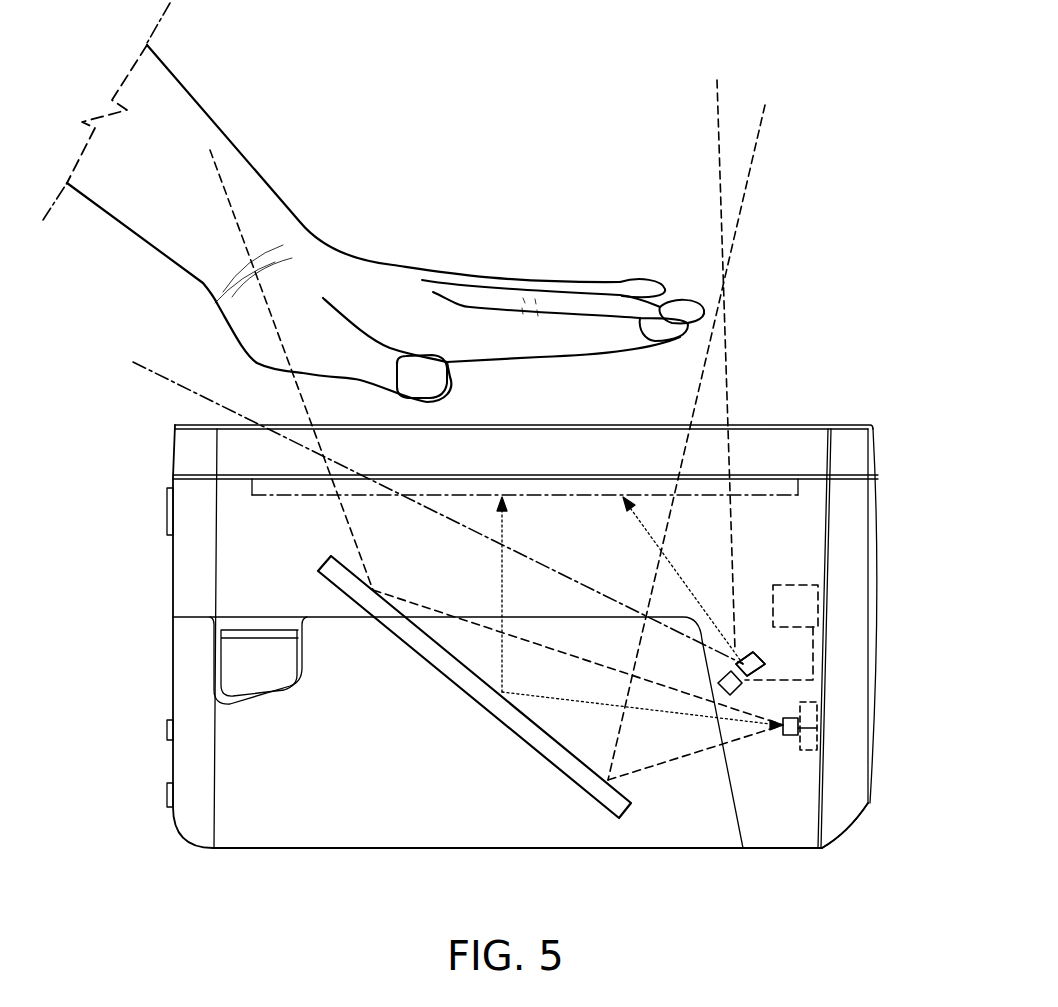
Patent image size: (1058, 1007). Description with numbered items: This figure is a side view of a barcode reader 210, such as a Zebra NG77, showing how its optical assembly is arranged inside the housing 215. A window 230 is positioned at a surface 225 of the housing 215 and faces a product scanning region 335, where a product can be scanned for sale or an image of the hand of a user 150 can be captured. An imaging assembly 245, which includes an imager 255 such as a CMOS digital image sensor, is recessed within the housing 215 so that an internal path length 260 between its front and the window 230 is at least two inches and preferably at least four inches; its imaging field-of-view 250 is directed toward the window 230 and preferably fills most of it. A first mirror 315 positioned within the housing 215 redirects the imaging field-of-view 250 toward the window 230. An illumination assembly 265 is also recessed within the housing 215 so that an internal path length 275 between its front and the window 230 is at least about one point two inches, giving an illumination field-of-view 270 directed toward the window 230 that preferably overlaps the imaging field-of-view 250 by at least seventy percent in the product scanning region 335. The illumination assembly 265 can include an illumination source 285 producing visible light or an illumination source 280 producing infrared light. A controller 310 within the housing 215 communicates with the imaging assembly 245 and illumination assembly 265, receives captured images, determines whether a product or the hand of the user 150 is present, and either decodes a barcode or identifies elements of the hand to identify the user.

The hand of a user 150 is at (392, 254).
The product scanning region 335 is at (523, 225).
The barcode reader 210 is at (824, 282).
The housing 215 is at (710, 848).
The surface 225 is at (800, 425).
The window 230 is at (800, 489).
The internal path length 275 is at (632, 515).
The illumination field-of-view 270 is at (738, 547).
The controller 310 is at (818, 598).
The illumination assembly 265 is at (778, 662).
The illumination source 280 is at (765, 657).
The illumination source 285 is at (745, 681).
The imager 255 is at (817, 735).
The first mirror 315 is at (455, 685).
The imaging field-of-view 250 is at (650, 770).
The internal path length 260 is at (673, 715).
The imaging assembly 245 is at (838, 764).